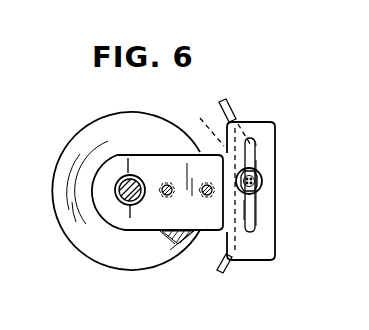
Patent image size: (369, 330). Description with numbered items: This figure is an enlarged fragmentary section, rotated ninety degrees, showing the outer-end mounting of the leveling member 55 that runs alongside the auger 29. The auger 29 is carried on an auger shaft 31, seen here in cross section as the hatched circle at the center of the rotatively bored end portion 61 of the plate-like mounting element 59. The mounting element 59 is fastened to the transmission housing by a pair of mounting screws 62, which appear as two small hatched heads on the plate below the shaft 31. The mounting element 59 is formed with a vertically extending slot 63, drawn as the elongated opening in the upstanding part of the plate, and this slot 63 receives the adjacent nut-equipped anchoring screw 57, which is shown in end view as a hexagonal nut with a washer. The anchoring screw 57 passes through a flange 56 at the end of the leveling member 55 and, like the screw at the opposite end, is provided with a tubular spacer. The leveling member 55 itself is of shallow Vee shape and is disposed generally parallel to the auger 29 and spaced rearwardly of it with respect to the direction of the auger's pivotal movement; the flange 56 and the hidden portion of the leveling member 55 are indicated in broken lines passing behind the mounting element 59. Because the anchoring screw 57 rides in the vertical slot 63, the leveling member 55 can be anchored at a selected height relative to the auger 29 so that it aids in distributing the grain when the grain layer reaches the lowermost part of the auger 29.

The auger 29 is at (93, 252).
The auger shaft 31 is at (118, 196).
The leveling member 55 is at (232, 113).
The flange 56 is at (214, 122).
The anchoring screw 57 is at (261, 177).
The mounting element 59 is at (275, 142).
The end portion 61 is at (123, 247).
The mounting screws 62 is at (206, 197).
The slot 63 is at (252, 228).